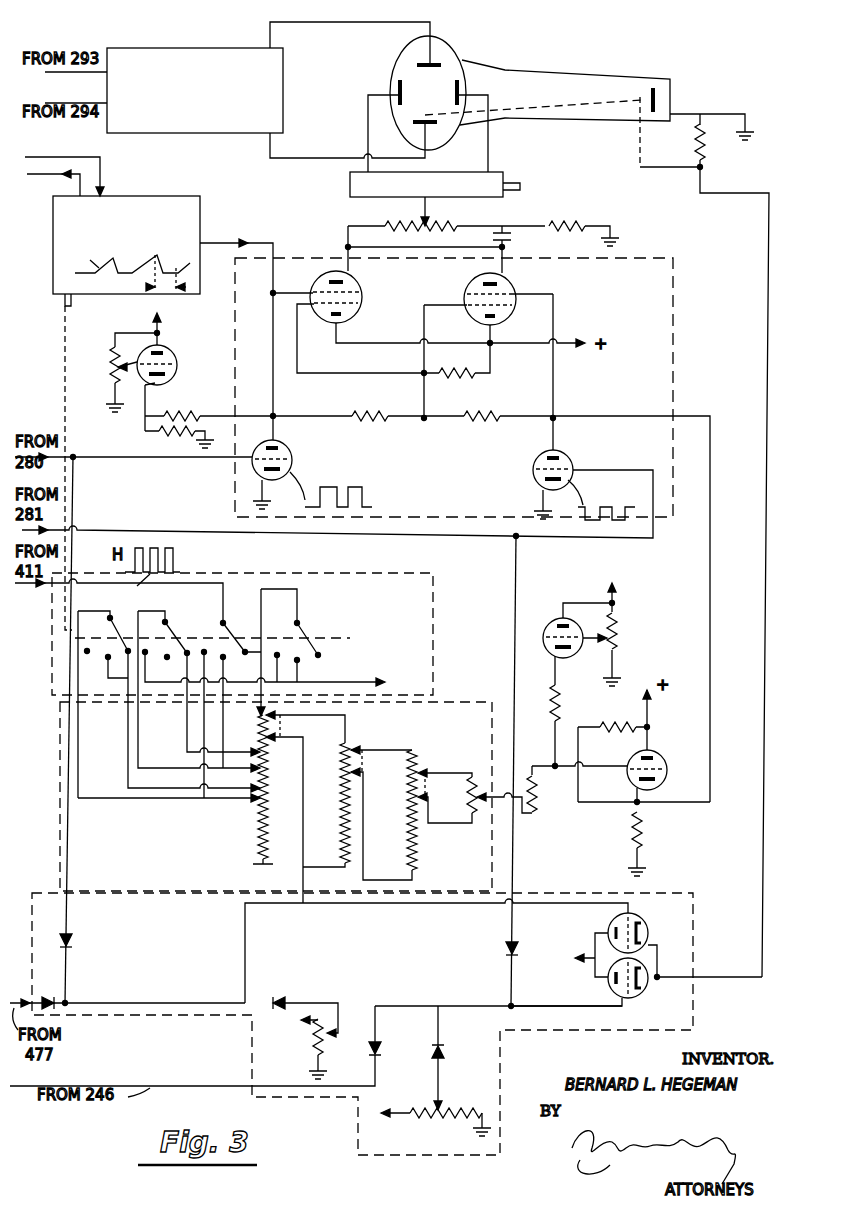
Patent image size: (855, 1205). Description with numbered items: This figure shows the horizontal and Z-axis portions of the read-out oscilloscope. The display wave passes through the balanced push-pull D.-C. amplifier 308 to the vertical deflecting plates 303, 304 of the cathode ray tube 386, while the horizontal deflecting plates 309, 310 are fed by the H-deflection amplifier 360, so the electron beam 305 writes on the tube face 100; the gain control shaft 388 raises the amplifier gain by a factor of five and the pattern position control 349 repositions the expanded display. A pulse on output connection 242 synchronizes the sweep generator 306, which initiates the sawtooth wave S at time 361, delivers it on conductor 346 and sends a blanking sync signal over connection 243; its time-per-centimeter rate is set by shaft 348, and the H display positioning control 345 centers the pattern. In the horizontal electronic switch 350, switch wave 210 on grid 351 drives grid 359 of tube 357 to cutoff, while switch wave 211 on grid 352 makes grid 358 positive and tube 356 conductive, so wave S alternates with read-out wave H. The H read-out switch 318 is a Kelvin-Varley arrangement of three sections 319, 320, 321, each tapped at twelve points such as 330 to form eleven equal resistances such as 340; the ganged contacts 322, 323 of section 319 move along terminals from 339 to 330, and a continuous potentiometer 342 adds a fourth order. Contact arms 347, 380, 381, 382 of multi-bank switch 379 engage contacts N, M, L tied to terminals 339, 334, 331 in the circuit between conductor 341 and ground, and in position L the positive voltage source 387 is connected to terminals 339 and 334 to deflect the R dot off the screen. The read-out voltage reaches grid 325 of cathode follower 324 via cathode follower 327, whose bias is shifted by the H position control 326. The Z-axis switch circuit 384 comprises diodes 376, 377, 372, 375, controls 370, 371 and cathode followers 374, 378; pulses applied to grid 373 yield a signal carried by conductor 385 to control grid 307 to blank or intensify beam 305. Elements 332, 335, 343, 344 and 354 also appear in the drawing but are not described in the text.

The tube face 100 is at (463, 62).
The switch wave 210 is at (330, 488).
The switch wave 211 is at (598, 506).
The output connection 242 is at (103, 182).
The sync connection 243 is at (75, 180).
The vertical deflecting plate 303 is at (436, 58).
The vertical deflecting plate 304 is at (434, 128).
The electron beam 305 is at (562, 105).
The sweep generator 306 is at (198, 198).
The control grid 307 is at (643, 92).
The push-pull D.-C. amplifier 308 is at (195, 48).
The horizontal deflecting plate 309 is at (398, 83).
The horizontal deflecting plate 310 is at (468, 104).
The H read-out switch 318 is at (458, 742).
The switch section 319 is at (302, 783).
The switch section 320 is at (336, 840).
The switch section 321 is at (408, 855).
The movable switch contact 322 is at (295, 717).
The switch contact 323 is at (294, 739).
The cathode follower 324 is at (662, 762).
The grid 325 is at (653, 782).
The H position control 326 is at (616, 642).
The cathode follower 327 is at (543, 639).
The switch contact point 330 is at (257, 848).
The terminal 331 is at (255, 805).
The resistor section 332 is at (280, 799).
The terminal 334 is at (258, 789).
The resistor section 335 is at (258, 763).
The contact point 339 is at (257, 722).
The resistance 340 is at (256, 832).
The conductor 341 is at (165, 590).
The continuous potentiometer 342 is at (470, 793).
The vacuum tube 343 is at (183, 363).
The cathode 344 is at (176, 378).
The H display positioning control 345 is at (112, 362).
The output connection 346 is at (275, 291).
The contact arm 347 is at (238, 637).
The shaft 348 is at (62, 304).
The pattern position control 349 is at (430, 229).
The horizontal electronic switch 350 is at (465, 517).
The grid 351 is at (291, 463).
The grid 352 is at (572, 466).
The lead 354 is at (556, 410).
The tube 356 is at (510, 312).
The tube 357 is at (311, 320).
The grid 358 is at (513, 292).
The grid 359 is at (358, 292).
The H-deflection amplifier 360 is at (350, 185).
The initiation time 361 is at (128, 275).
The control 370 is at (312, 1046).
The control 371 is at (442, 1110).
The diode 372 is at (380, 1052).
The grid 373 is at (612, 988).
The cathode follower 374 is at (632, 998).
The diode 375 is at (513, 944).
The diode 376 is at (68, 940).
The diode 377 is at (47, 996).
The cathode follower 378 is at (645, 925).
The multi-bank switch 379 is at (405, 636).
The contact arm 380 is at (122, 635).
The contact arm 381 is at (183, 640).
The contact arm 382 is at (312, 648).
The Z-axis switch circuit 384 is at (250, 1015).
The conductor 385 is at (766, 525).
The cathode ray tube 386 is at (500, 68).
The positive voltage source 387 is at (366, 683).
The gain control shaft 388 is at (520, 186).